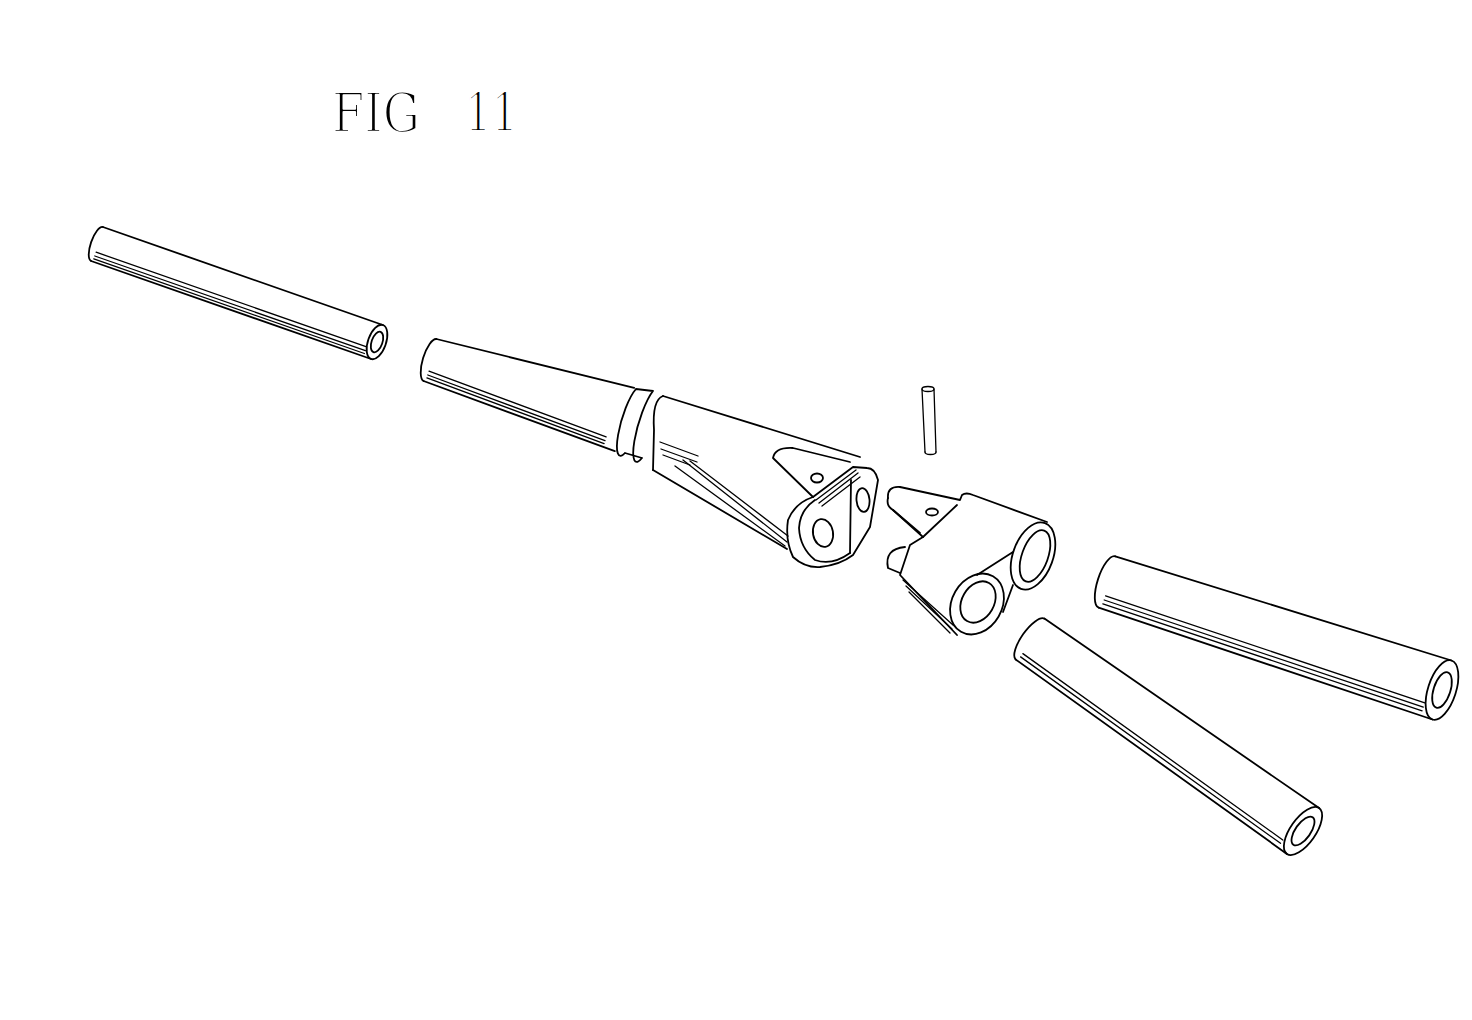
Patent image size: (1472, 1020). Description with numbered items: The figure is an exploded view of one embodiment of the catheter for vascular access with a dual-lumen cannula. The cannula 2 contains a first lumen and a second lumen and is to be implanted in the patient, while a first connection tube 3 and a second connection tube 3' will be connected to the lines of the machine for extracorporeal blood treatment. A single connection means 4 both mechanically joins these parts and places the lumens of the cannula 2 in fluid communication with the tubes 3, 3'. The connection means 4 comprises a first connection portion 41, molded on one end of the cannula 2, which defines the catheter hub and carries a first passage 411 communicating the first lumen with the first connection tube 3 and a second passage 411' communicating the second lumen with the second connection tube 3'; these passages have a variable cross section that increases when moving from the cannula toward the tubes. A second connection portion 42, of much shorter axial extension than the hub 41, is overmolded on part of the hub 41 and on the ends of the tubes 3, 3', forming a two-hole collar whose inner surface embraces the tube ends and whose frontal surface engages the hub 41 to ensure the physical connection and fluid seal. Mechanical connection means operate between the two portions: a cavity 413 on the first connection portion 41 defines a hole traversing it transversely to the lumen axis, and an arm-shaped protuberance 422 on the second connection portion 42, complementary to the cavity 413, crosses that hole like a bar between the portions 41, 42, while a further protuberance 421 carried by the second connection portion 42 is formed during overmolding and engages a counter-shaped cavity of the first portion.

The cannula 2 is at (205, 270).
The first connection tube 3 is at (1150, 739).
The second connection tube 3' is at (1280, 578).
The connection means 4 is at (606, 589).
The first connection portion 41 is at (740, 428).
The first passage 411 is at (759, 622).
The second passage 411' is at (850, 627).
The cavity 413 is at (818, 472).
The second connection portion 42 is at (1003, 512).
The protuberance 421 is at (858, 460).
The protuberance 422 is at (930, 413).